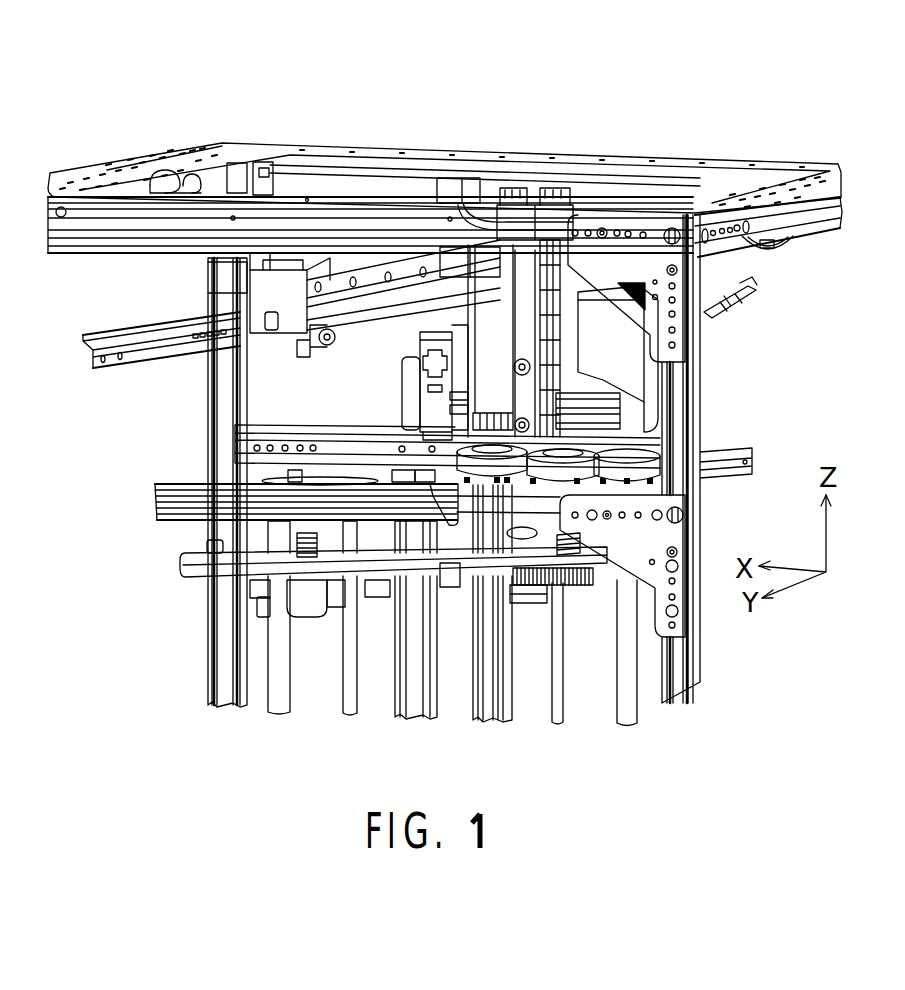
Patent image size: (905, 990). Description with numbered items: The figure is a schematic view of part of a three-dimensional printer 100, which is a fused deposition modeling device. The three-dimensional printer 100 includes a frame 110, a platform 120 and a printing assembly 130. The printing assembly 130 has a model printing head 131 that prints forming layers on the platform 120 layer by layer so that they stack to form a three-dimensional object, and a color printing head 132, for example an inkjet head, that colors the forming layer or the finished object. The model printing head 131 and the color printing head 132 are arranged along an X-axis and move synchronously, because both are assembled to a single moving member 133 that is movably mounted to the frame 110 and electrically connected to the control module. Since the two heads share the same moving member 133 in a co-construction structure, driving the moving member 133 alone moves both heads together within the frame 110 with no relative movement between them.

The three-dimensional printer 100 is at (445, 390).
The frame 110 is at (288, 145).
The platform 120 is at (550, 585).
The printing assembly 130 is at (571, 223).
The model printing head 131 is at (430, 413).
The color printing head 132 is at (633, 368).
The moving member 133 is at (483, 367).